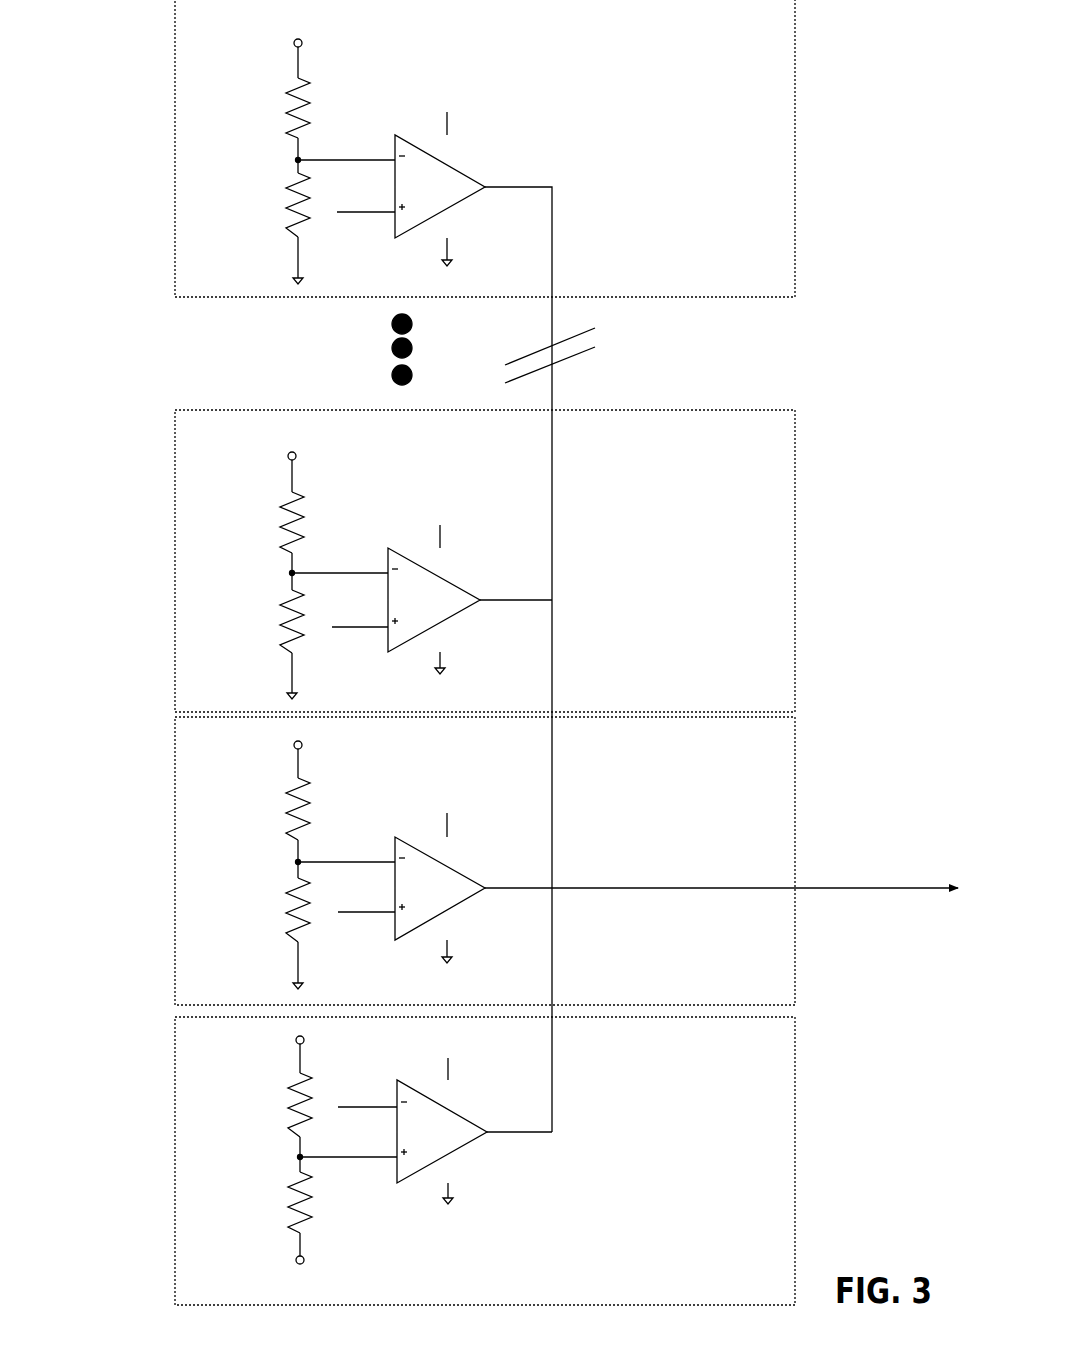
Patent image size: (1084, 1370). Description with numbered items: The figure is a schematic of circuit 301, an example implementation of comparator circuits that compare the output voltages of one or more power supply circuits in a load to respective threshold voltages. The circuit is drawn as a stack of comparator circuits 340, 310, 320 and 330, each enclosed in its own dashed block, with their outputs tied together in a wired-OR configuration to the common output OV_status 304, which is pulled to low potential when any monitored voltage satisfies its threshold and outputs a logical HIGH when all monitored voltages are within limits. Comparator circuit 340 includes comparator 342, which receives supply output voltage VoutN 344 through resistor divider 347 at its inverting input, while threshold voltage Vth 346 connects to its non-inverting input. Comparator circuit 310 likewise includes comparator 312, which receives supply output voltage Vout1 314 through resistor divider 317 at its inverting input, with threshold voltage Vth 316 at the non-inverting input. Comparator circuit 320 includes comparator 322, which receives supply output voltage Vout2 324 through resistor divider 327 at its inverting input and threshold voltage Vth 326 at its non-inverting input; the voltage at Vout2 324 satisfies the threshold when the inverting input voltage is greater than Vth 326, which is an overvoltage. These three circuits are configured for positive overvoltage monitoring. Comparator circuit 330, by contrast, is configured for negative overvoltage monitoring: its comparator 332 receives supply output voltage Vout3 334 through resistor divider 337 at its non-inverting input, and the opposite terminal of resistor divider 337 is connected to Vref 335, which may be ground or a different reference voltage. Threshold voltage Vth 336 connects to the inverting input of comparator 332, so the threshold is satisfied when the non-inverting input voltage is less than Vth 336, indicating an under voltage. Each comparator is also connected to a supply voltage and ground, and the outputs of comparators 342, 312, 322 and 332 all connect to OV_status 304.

The circuit 301 is at (128, 68).
The OV_status 304 is at (887, 911).
The comparator circuit 310 is at (797, 507).
The comparator 312 is at (463, 615).
The supply output voltage Vout1 314 is at (260, 489).
The threshold voltage Vth 316 is at (365, 654).
The resistor divider 317 is at (268, 622).
The comparator circuit 320 is at (797, 793).
The comparator 322 is at (463, 903).
The supply output voltage Vout2 324 is at (260, 777).
The threshold voltage Vth 326 is at (365, 941).
The resistor divider 327 is at (268, 898).
The comparator circuit 330 is at (797, 1088).
The comparator 332 is at (455, 1153).
The supply output voltage Vout3 334 is at (260, 1292).
The Vref 335 is at (255, 1081).
The threshold voltage Vth 336 is at (362, 1132).
The resistor divider 337 is at (278, 1180).
The comparator circuit 340 is at (797, 90).
The comparator 342 is at (473, 173).
The supply output voltage VoutN 344 is at (262, 72).
The threshold voltage Vth 346 is at (367, 237).
The resistor divider 347 is at (268, 212).